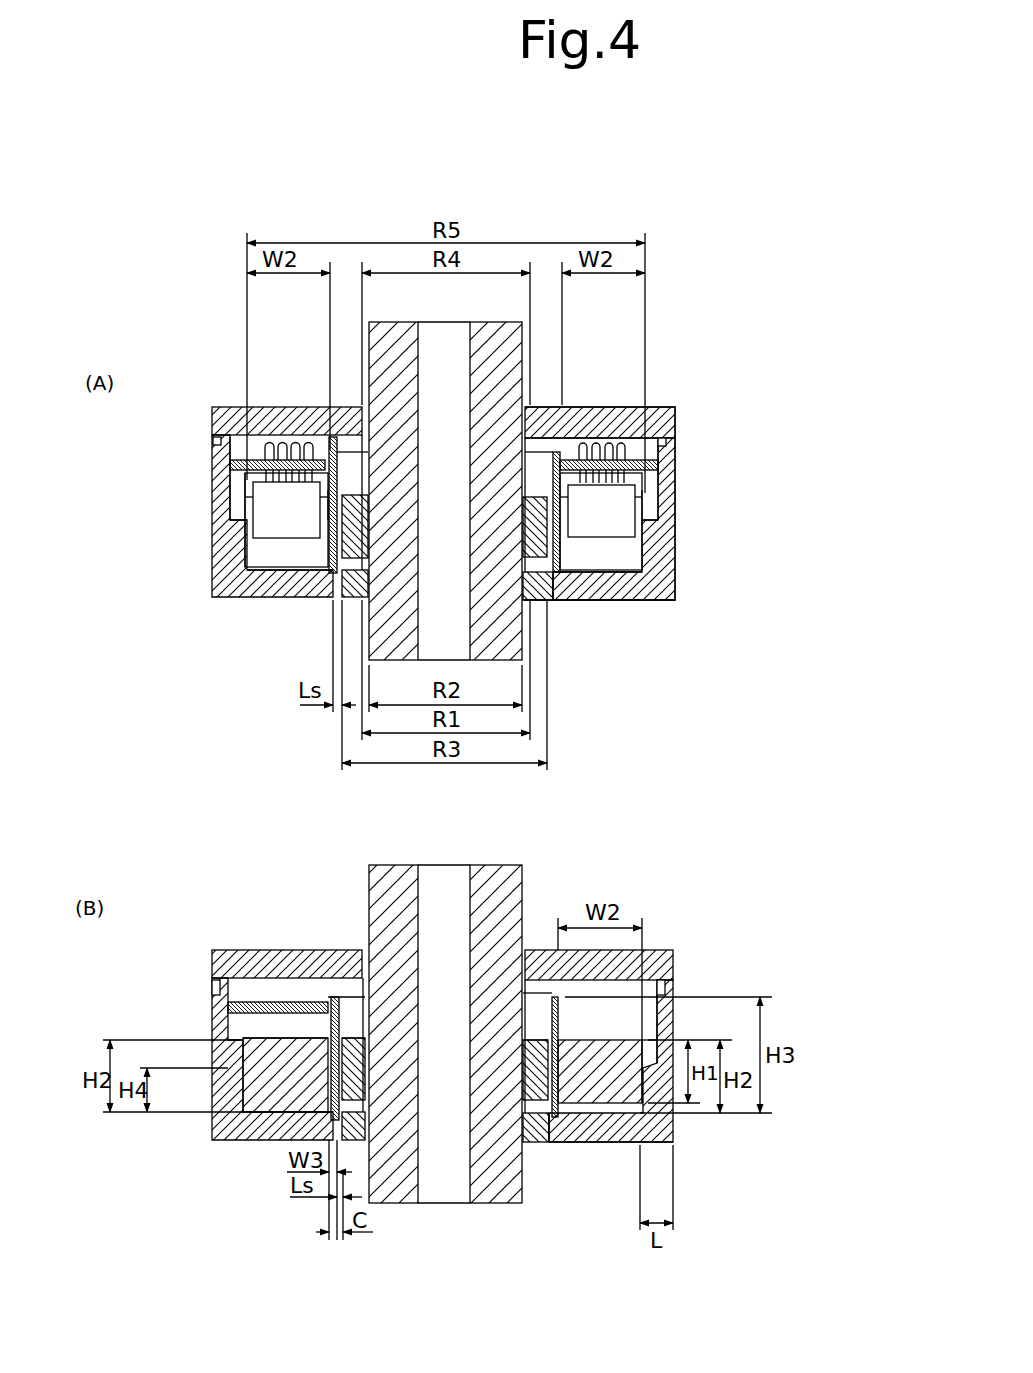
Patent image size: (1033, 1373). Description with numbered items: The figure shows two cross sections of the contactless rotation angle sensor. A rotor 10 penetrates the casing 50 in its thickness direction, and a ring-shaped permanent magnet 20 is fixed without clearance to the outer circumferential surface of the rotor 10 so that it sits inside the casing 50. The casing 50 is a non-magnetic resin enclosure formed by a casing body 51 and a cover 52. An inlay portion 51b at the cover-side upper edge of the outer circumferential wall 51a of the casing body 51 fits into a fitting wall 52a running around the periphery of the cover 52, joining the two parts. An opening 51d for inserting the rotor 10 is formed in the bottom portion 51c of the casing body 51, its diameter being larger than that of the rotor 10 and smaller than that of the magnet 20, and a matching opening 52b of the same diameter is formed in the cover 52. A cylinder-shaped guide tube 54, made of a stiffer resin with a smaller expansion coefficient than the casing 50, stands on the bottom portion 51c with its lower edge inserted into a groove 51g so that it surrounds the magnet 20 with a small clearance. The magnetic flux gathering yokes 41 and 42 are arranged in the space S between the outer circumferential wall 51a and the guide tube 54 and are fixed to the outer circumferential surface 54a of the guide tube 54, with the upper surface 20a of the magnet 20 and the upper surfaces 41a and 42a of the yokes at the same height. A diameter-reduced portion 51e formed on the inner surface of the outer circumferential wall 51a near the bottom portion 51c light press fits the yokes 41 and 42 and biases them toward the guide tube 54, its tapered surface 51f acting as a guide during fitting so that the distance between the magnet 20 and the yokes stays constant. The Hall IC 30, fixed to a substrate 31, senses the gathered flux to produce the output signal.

The rotor 10 is at (505, 326).
The ring-shaped permanent magnet 20 is at (535, 496).
The upper surface of the ring-shaped permanent magnet 20a is at (355, 1037).
The Hall IC 30 is at (270, 528).
The substrate 31 is at (243, 472).
The magnetic flux gathering yoke 41 is at (293, 558).
The upper surface of the magnetic flux gathering yoke 41a is at (627, 1039).
The magnetic flux gathering yoke 42 is at (262, 1090).
The upper surface of the magnetic flux gathering yoke 42a is at (262, 1037).
The casing 50 is at (780, 377).
The casing body 51 is at (690, 542).
The outer circumferential wall 51a is at (222, 460).
The inlay portion 51b is at (660, 440).
The bottom portion 51c is at (615, 605).
The opening 51d is at (531, 605).
The diameter-reduced portion 51e is at (238, 552).
The tapered surface 51f is at (243, 520).
The groove 51g is at (551, 578).
The cover 52 is at (690, 411).
The fitting wall 52a is at (667, 443).
The opening 52b is at (333, 470).
The guide tube 54 is at (310, 456).
The outer circumferential surface of the guide tube 54a is at (305, 460).
The space S is at (238, 478).